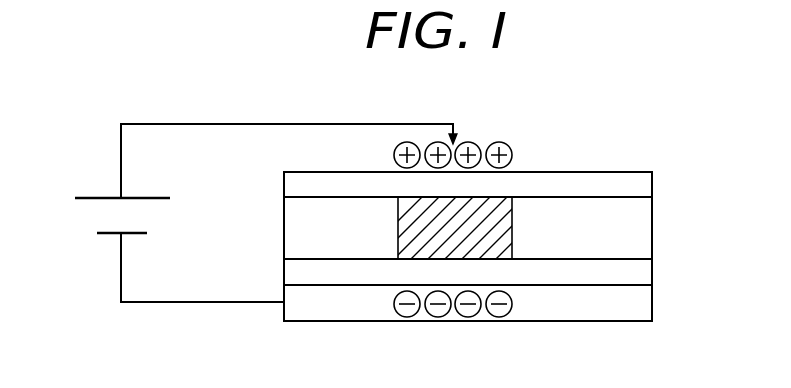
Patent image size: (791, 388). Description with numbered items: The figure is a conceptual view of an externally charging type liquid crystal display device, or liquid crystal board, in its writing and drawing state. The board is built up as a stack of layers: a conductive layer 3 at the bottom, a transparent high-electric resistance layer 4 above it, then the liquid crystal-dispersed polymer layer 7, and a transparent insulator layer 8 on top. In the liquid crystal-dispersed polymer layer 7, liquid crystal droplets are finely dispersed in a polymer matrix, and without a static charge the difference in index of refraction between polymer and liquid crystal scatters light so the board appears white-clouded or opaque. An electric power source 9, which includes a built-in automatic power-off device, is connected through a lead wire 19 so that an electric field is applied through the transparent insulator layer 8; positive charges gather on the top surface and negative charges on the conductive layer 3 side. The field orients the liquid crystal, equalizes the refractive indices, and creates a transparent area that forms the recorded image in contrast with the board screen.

The conductive layer 3 is at (627, 303).
The transparent high-electric resistance layer 4 is at (641, 272).
The liquid crystal-dispersed polymer layer 7 is at (658, 197).
The transparent insulator layer 8 is at (644, 180).
The electric power source 9 is at (83, 225).
The lead wire 19 is at (280, 123).